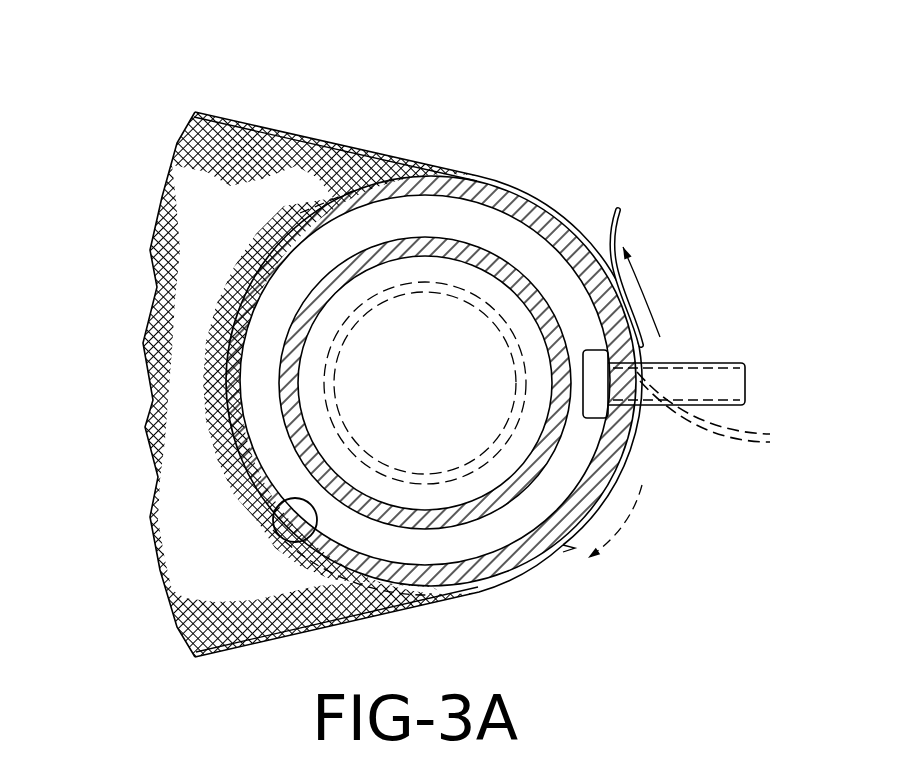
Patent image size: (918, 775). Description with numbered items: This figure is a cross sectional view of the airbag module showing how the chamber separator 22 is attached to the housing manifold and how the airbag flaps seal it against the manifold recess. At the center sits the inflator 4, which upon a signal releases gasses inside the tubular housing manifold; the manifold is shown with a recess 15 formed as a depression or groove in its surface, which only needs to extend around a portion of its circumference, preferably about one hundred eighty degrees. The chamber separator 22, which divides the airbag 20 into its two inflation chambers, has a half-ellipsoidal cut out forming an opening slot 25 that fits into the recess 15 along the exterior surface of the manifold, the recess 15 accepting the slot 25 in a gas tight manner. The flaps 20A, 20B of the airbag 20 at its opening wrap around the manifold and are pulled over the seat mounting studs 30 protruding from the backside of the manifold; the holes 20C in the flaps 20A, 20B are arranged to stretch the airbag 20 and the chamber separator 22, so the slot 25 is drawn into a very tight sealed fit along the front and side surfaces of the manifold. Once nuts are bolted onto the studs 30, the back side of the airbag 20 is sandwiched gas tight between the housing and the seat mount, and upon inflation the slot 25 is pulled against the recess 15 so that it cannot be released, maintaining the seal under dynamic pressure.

The inflator 4 is at (487, 260).
The recess 15 is at (353, 192).
The airbag 20 is at (477, 168).
The flap 20A is at (618, 212).
The flap 20B is at (577, 543).
The holes 20C is at (731, 415).
The chamber separator 22 is at (178, 371).
The opening slot 25 is at (300, 540).
The seat mounting studs 30 is at (700, 363).